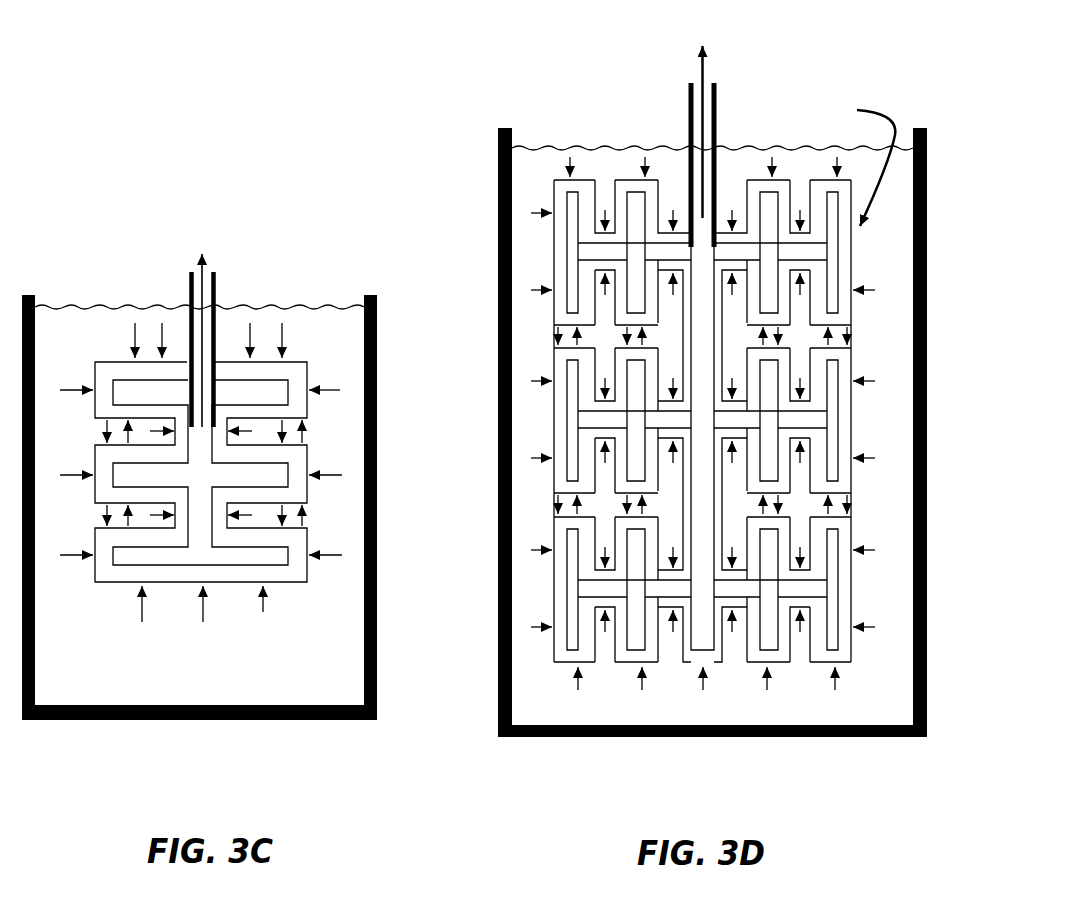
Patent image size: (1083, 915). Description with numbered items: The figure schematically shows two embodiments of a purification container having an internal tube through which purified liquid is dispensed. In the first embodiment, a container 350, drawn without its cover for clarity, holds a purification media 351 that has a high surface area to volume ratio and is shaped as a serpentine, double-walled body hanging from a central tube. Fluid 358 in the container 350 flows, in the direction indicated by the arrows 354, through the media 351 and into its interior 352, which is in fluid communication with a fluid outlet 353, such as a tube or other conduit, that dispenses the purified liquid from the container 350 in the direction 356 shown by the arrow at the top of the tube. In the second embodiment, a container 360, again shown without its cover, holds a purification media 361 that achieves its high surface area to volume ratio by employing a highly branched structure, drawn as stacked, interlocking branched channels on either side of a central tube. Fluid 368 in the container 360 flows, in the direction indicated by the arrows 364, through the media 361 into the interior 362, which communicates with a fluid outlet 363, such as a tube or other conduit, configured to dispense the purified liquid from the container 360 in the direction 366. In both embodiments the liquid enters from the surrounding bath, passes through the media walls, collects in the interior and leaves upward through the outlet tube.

In FIG. 3C, the container 350 is at (376, 350).
In FIG. 3C, the purification media 351 is at (194, 421).
In FIG. 3C, the interior 352 is at (222, 484).
In FIG. 3C, the fluid outlet 353 is at (190, 280).
In FIG. 3C, the arrows 354 is at (340, 390).
In FIG. 3C, the direction 356 is at (204, 262).
In FIG. 3C, the fluid 358 is at (133, 679).
In FIG. 3D, the container 360 is at (500, 262).
In FIG. 3D, the purification media 361 is at (702, 369).
In FIG. 3D, the interior 362 is at (717, 601).
In FIG. 3D, the fluid outlet 363 is at (690, 122).
In FIG. 3D, the arrows 364 is at (835, 162).
In FIG. 3D, the direction 366 is at (705, 70).
In FIG. 3D, the fluid 368 is at (887, 716).